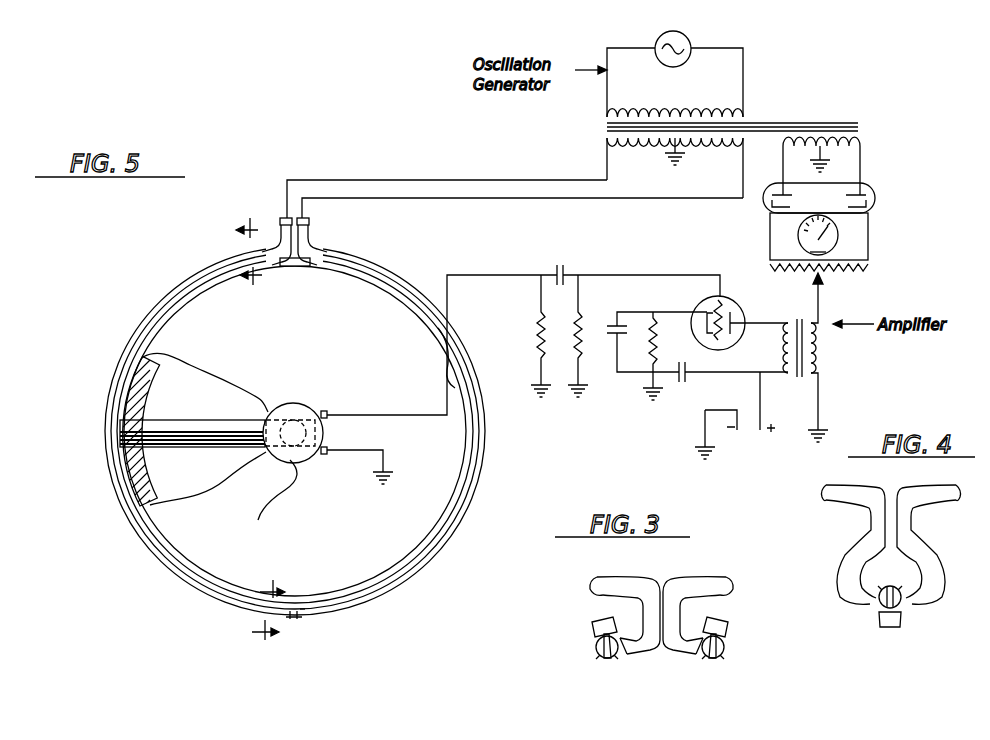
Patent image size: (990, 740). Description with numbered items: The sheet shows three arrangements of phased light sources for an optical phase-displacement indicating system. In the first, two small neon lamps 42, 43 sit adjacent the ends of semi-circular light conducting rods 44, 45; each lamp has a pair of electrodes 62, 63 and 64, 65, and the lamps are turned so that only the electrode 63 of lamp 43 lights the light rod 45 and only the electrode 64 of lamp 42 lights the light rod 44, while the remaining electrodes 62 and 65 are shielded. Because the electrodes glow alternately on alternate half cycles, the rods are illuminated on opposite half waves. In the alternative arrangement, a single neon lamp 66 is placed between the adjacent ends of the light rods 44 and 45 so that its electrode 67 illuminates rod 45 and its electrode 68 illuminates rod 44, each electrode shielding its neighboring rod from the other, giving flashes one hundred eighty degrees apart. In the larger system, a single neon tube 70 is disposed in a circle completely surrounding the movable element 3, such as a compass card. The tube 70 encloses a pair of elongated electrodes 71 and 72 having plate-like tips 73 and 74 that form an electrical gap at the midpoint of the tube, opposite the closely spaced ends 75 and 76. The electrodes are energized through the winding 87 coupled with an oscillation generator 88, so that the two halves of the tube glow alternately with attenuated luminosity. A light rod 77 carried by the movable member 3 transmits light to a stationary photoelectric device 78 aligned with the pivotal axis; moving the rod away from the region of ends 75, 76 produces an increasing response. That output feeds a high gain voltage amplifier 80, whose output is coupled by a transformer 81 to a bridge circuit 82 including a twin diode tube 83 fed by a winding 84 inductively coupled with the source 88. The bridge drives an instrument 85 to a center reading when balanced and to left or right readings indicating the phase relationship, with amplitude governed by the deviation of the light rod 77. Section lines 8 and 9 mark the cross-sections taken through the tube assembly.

In FIG. 5, the movable element 3 is at (152, 332).
In FIG. 5, the section line 8- 8 is at (253, 256).
In FIG. 5, the section line 9- 9 is at (261, 610).
In FIG. 3, the neon lamp 42 is at (730, 642).
In FIG. 3, the neon lamp 43 is at (592, 640).
In FIG. 3, the light rod 44 is at (728, 578).
In FIG. 4, the light rod 44 is at (942, 486).
In FIG. 3, the light rod 45 is at (608, 568).
In FIG. 4, the light rod 45 is at (853, 470).
In FIG. 3, the electrode 62 is at (598, 659).
In FIG. 3, the electrode 63 is at (616, 658).
In FIG. 3, the electrode 64 is at (702, 659).
In FIG. 3, the electrode 65 is at (722, 658).
In FIG. 4, the neon lamp 66 is at (879, 614).
In FIG. 4, the electrode 67 is at (880, 572).
In FIG. 4, the electrode 68 is at (918, 574).
In FIG. 5, the neon tube 70 is at (470, 450).
In FIG. 5, the elongated electrode 71 is at (455, 510).
In FIG. 5, the elongated electrode 72 is at (133, 508).
In FIG. 5, the plate-like tip 73 is at (303, 617).
In FIG. 5, the plate-like tip 74 is at (290, 620).
In FIG. 5, the end of the tube 75 is at (272, 268).
In FIG. 5, the end of the tube 76 is at (312, 262).
In FIG. 5, the light rod 77 is at (256, 442).
In FIG. 5, the photoelectric device 78 is at (285, 405).
In FIG. 5, the high gain voltage amplifier 80 is at (679, 272).
In FIG. 5, the transformer 81 is at (818, 352).
In FIG. 5, the bridge circuit 82 is at (875, 226).
In FIG. 5, the twin diode tube 83 is at (876, 197).
In FIG. 5, the winding 84 is at (850, 153).
In FIG. 5, the instrument 85 is at (840, 240).
In FIG. 5, the winding 87 is at (607, 140).
In FIG. 5, the oscillation generator 88 is at (693, 39).